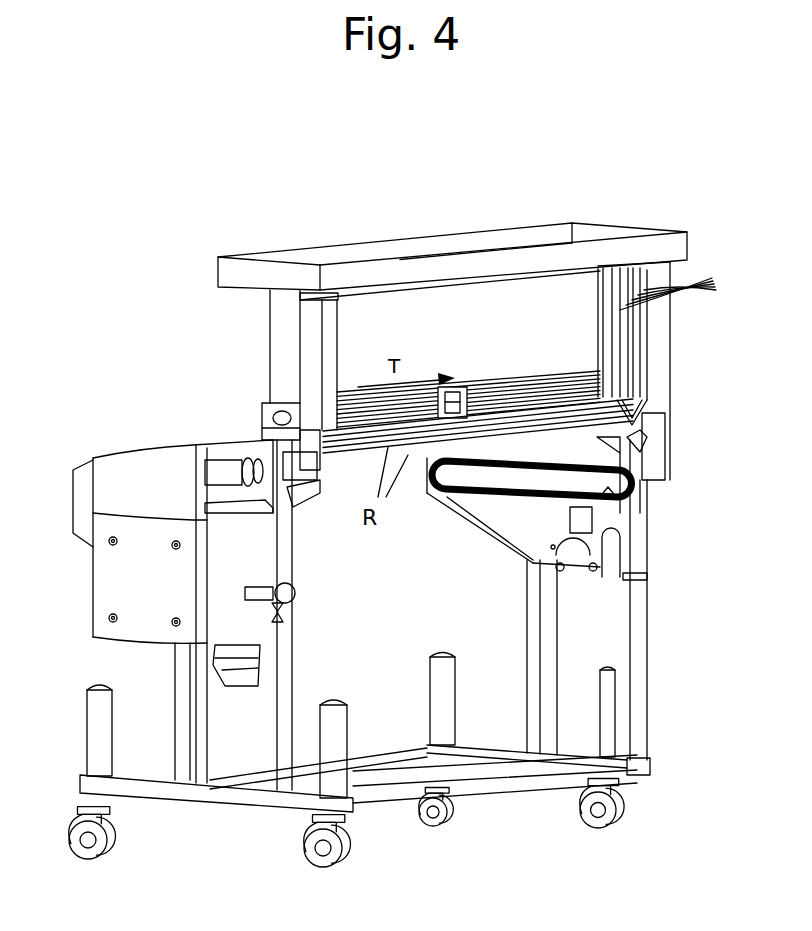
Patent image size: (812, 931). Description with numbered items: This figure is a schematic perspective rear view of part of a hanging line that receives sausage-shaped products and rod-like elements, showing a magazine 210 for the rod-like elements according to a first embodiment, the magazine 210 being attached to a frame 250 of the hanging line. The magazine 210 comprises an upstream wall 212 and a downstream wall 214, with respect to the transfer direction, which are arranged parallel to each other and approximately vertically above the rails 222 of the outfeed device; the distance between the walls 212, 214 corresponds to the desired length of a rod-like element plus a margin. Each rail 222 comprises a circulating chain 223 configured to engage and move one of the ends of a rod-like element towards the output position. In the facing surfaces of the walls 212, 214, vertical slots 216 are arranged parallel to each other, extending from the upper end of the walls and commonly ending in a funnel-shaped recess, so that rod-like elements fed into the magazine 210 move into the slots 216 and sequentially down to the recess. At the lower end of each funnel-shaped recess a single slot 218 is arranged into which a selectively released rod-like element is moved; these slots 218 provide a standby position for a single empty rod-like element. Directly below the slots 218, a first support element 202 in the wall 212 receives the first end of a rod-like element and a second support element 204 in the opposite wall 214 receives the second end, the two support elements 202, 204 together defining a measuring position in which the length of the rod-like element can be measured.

The magazine 210 is at (223, 257).
The downstream wall 214 is at (283, 367).
The upstream wall 212 is at (670, 360).
The vertical slots 216 is at (692, 291).
The single slot 218 is at (630, 430).
The first support element 202 is at (653, 480).
The rail 222 is at (502, 518).
The circulating chain 223 is at (447, 495).
The second support element 204 is at (332, 492).
The frame 250 is at (637, 657).